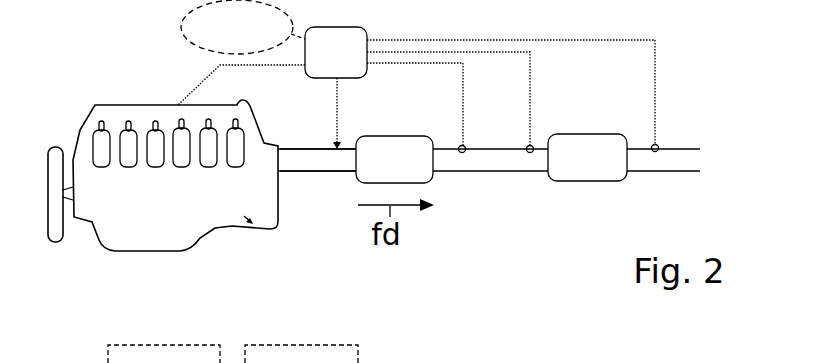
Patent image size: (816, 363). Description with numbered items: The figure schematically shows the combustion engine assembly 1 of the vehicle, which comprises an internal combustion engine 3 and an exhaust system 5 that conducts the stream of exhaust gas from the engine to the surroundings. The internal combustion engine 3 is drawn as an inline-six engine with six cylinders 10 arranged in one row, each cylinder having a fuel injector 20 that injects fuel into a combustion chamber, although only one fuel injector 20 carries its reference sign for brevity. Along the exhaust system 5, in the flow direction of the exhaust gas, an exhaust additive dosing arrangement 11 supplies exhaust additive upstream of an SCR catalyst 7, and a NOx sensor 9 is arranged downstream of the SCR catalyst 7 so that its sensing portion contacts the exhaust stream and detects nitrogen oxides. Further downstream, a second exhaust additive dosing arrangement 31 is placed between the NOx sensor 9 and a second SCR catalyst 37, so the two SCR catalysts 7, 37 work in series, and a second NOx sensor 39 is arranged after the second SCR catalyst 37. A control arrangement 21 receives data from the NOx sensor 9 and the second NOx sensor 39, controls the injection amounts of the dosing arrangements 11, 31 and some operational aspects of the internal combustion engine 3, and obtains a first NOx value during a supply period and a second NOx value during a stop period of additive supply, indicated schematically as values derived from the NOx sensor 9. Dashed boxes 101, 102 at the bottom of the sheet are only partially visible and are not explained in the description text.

The combustion engine assembly 1 is at (126, 30).
The internal combustion engine 3 is at (114, 106).
The exhaust system 5 is at (530, 202).
The SCR catalyst 7 is at (384, 173).
The NOx sensor 9 is at (458, 147).
The cylinders 10 is at (156, 152).
The exhaust additive dosing arrangement 11 is at (335, 149).
The fuel injector 20 is at (100, 127).
The control arrangement 21 is at (318, 67).
The second exhaust additive dosing arrangement 31 is at (526, 148).
The second SCR catalyst 37 is at (570, 173).
The second NOx sensor 39 is at (650, 147).
The method step 101 is at (164, 354).
The method step 102 is at (301, 354).